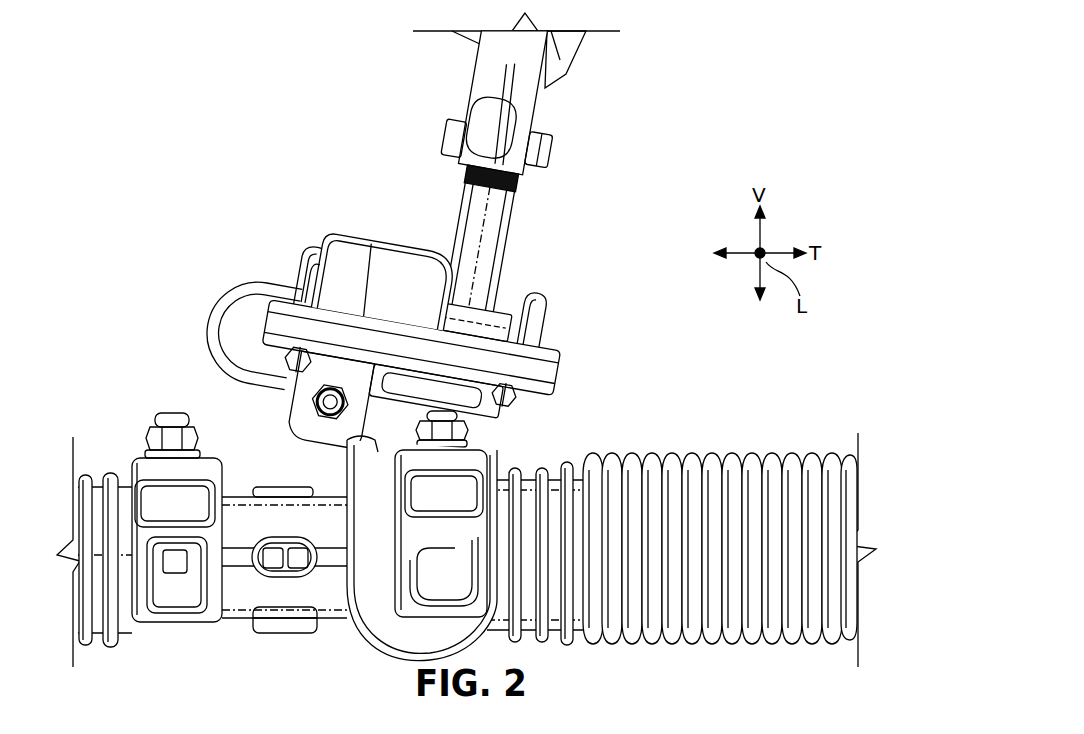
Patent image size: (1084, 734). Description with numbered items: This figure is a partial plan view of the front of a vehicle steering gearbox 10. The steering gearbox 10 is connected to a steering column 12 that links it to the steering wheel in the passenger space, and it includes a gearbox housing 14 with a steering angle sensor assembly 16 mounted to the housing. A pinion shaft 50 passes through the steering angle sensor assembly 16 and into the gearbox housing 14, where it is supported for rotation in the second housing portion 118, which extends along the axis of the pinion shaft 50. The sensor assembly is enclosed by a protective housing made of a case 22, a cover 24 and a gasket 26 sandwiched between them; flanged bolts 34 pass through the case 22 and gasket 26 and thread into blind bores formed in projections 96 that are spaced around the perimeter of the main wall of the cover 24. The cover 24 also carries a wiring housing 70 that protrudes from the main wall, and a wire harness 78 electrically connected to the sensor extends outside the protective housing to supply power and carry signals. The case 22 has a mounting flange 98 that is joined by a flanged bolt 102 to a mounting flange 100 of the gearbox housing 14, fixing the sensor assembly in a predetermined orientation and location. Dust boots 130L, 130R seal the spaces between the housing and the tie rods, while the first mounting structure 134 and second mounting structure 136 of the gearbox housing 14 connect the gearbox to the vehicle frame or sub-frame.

The steering gearbox 10 is at (212, 100).
The steering column 12 is at (480, 68).
The gearbox housing 14 is at (207, 634).
The steering angle sensor assembly 16 is at (343, 203).
The case 22 is at (512, 405).
The cover 24 is at (378, 240).
The gasket 26 is at (563, 360).
The flanged bolt 34 is at (238, 344).
The pinion shaft 50 is at (503, 218).
The wiring housing 70 is at (335, 232).
The wire harness 78 is at (252, 285).
The projections 96 is at (302, 250).
The mounting flange 98 is at (300, 384).
The mounting flange 100 is at (322, 440).
The flanged bolt 102 is at (312, 410).
The second housing portion 118 is at (336, 628).
The dust boot 130L is at (76, 456).
The dust boot 130R is at (793, 452).
The first mounting structure 134 is at (133, 462).
The second mounting structure 136 is at (490, 468).